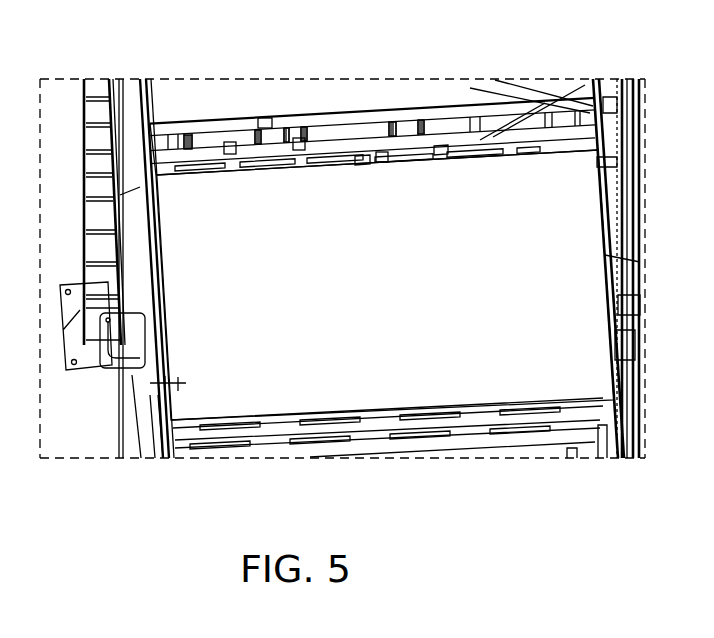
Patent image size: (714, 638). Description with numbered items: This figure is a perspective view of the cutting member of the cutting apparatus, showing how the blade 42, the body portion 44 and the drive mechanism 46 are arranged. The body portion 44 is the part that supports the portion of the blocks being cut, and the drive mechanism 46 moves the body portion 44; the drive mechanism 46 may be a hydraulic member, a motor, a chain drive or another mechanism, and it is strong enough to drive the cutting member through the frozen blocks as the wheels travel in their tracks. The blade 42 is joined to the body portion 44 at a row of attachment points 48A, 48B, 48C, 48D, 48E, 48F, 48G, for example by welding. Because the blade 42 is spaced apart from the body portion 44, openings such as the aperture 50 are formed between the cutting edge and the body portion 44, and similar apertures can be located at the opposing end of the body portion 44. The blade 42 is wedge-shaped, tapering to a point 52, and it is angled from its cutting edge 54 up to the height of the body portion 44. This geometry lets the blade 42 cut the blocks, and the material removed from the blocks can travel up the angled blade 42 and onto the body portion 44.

The blade 42 is at (312, 157).
The body portion 44 is at (580, 310).
The drive mechanism 46 is at (588, 452).
The attachment point 48A is at (152, 113).
The attachment point 48B is at (230, 147).
The attachment point 48C is at (298, 143).
The attachment point 48D is at (382, 158).
The attachment point 48E is at (490, 102).
The attachment point 48F is at (505, 135).
The attachment point 48G is at (621, 108).
The aperture 50 is at (265, 118).
The point 52 is at (362, 158).
The cutting edge 54 is at (440, 150).